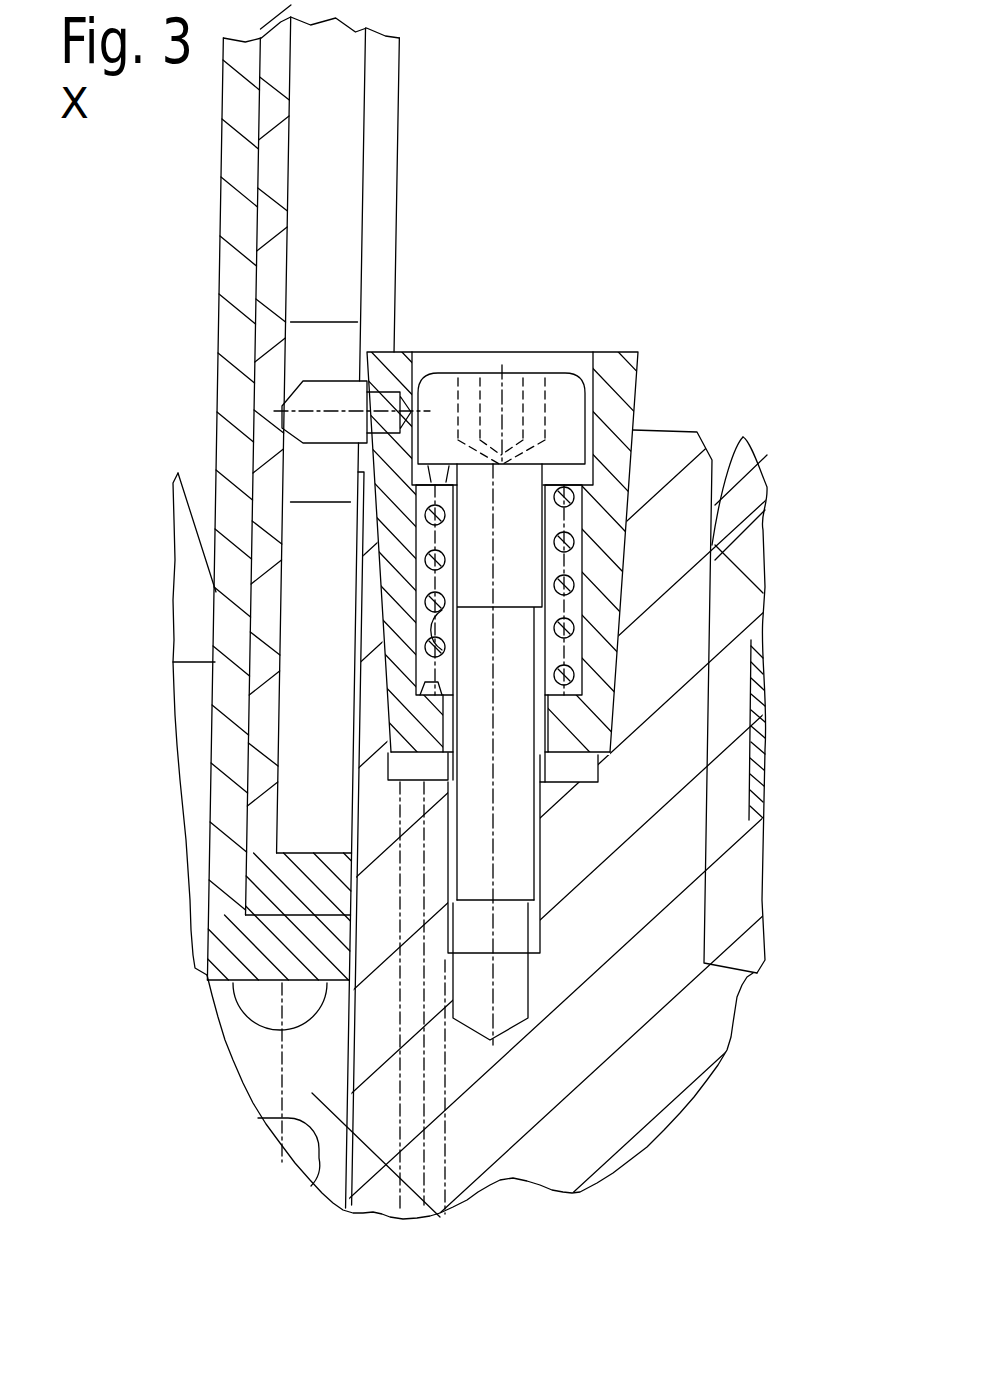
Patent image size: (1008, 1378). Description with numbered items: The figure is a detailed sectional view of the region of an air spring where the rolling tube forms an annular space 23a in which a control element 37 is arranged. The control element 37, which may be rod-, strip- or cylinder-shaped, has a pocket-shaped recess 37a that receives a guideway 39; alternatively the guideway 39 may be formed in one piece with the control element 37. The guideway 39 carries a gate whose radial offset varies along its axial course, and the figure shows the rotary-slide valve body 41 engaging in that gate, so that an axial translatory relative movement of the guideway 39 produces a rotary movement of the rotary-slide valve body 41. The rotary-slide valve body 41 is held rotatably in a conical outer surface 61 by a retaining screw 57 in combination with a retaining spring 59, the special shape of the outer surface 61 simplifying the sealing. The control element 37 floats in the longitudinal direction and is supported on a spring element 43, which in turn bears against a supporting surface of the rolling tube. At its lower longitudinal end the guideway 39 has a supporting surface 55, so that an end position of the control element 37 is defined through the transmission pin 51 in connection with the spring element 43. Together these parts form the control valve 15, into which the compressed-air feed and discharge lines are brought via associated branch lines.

The control valve 15 is at (587, 636).
The annular space 23a is at (428, 1220).
The control element 37 is at (423, 155).
The pocket-shaped recess 37a is at (262, 924).
The guideway 39 is at (332, 97).
The rotary-slide valve body 41 is at (611, 378).
The spring element 43 is at (253, 998).
The transmission pin 51 is at (337, 397).
The supporting surface 55 is at (310, 853).
The retaining screw 57 is at (527, 490).
The retaining spring 59 is at (565, 543).
The conical outer surface 61 is at (620, 610).